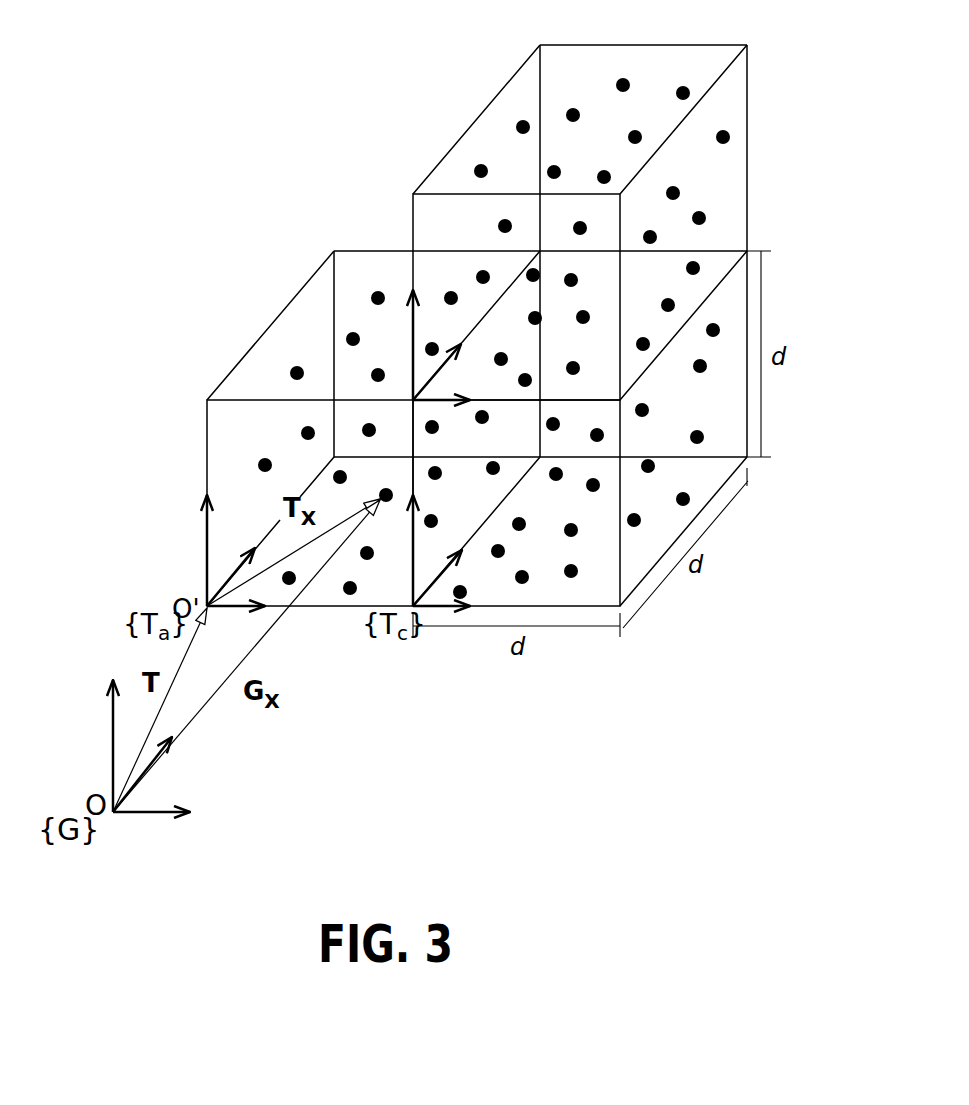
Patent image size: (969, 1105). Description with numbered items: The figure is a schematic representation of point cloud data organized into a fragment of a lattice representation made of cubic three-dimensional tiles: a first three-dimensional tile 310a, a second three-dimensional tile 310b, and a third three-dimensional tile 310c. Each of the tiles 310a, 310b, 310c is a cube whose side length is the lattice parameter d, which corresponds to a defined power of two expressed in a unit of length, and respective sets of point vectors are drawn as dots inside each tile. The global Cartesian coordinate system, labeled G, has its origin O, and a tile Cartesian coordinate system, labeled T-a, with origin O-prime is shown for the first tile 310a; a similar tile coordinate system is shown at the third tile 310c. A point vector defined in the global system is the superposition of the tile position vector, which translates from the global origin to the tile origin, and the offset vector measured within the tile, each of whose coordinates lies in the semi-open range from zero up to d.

The first 3D tile 310a is at (312, 305).
The second 3D tile 310b is at (732, 92).
The third 3D tile 310c is at (732, 290).